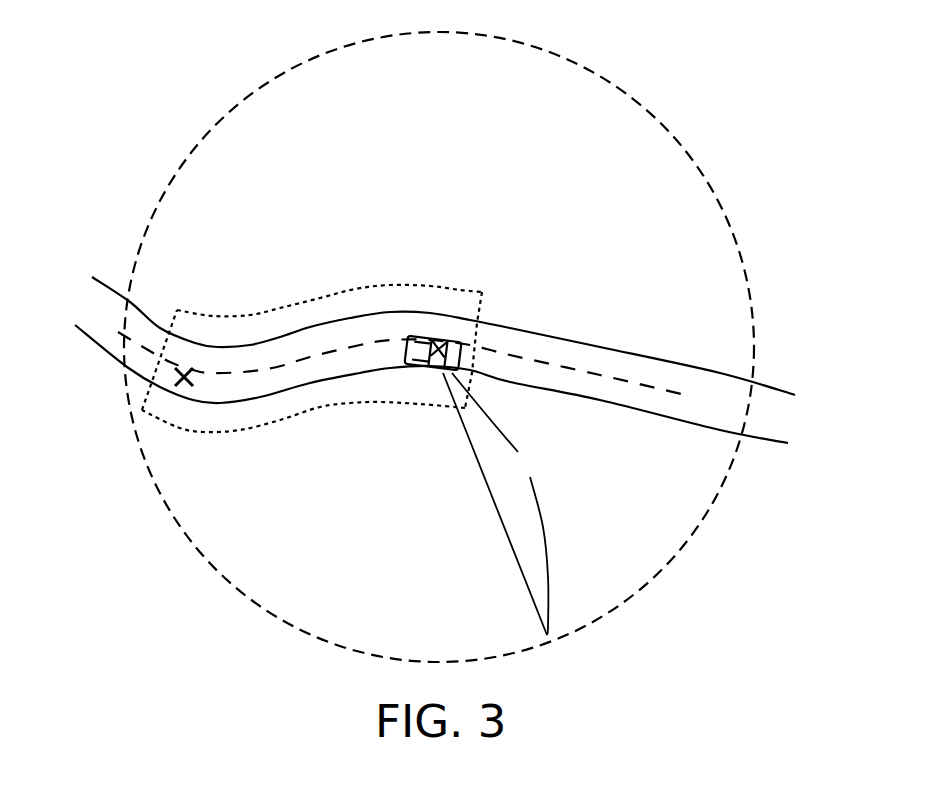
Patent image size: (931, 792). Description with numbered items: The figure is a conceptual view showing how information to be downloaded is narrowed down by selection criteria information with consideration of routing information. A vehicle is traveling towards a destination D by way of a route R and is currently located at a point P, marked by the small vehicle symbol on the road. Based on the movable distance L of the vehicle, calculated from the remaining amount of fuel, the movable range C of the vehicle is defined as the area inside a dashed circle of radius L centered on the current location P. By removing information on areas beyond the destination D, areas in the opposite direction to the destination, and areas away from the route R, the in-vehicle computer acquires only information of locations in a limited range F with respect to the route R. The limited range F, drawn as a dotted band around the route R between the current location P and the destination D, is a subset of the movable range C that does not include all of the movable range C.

The movable range C is at (647, 582).
The route R is at (766, 391).
The limited range F is at (305, 302).
The destination D is at (184, 386).
The current location P is at (423, 358).
The movable distance L is at (495, 504).